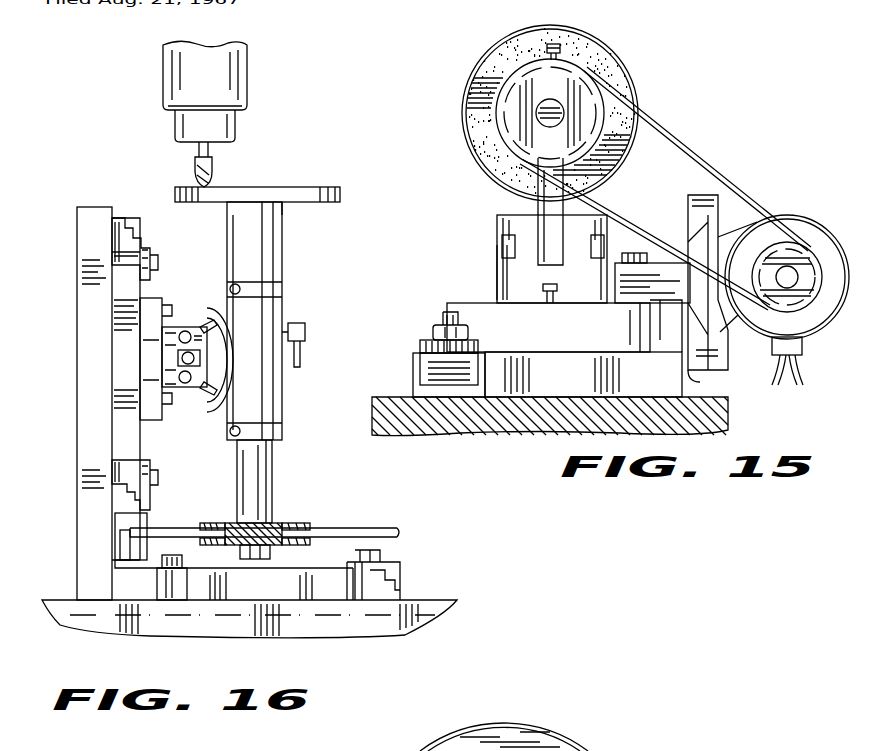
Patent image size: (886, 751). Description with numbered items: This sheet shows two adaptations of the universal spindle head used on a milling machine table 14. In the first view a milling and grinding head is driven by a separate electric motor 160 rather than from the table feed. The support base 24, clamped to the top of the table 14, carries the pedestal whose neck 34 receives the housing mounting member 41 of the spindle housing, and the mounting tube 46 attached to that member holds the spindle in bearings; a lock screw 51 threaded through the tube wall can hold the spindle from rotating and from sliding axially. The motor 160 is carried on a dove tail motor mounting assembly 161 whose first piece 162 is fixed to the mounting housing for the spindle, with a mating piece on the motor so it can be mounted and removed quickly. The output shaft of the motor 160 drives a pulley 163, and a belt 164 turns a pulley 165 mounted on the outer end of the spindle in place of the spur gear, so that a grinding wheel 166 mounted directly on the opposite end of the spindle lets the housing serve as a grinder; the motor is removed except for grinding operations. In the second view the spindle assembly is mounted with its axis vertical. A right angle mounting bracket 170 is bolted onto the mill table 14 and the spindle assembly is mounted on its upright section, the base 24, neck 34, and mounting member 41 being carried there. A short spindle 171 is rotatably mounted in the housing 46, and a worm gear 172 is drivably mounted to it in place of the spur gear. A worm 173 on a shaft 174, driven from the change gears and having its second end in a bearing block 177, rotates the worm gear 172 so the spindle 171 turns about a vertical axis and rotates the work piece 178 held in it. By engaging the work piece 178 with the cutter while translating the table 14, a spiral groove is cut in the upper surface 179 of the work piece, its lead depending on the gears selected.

In FIG. 16, the table 14 is at (303, 628).
In FIG. 15, the table 14 is at (420, 436).
In FIG. 16, the support base 24 is at (160, 300).
In FIG. 15, the support base 24 is at (448, 310).
In FIG. 16, the neck 34 is at (180, 386).
In FIG. 15, the neck 34 is at (505, 280).
In FIG. 16, the housing mounting member 41 is at (208, 306).
In FIG. 15, the housing mounting member 41 is at (515, 210).
In FIG. 16, the mounting tube 46 is at (275, 393).
In FIG. 15, the lock screw 51 is at (560, 48).
In FIG. 15, the motor 160 is at (818, 318).
In FIG. 15, the dove tail motor mounting assembly 161 is at (700, 382).
In FIG. 15, the first piece 162 is at (627, 290).
In FIG. 15, the pulley 163 is at (805, 238).
In FIG. 15, the belt 164 is at (660, 135).
In FIG. 15, the pulley 165 is at (497, 113).
In FIG. 15, the grinding wheel 166 is at (638, 82).
In FIG. 16, the right angle mounting bracket 170 is at (100, 456).
In FIG. 16, the short spindle 171 is at (263, 484).
In FIG. 16, the worm gear 172 is at (298, 547).
In FIG. 16, the worm 173 is at (233, 555).
In FIG. 16, the shaft 174 is at (346, 524).
In FIG. 16, the bearing block 177 is at (115, 565).
In FIG. 16, the work piece 178 is at (305, 205).
In FIG. 16, the upper surface 179 is at (270, 190).